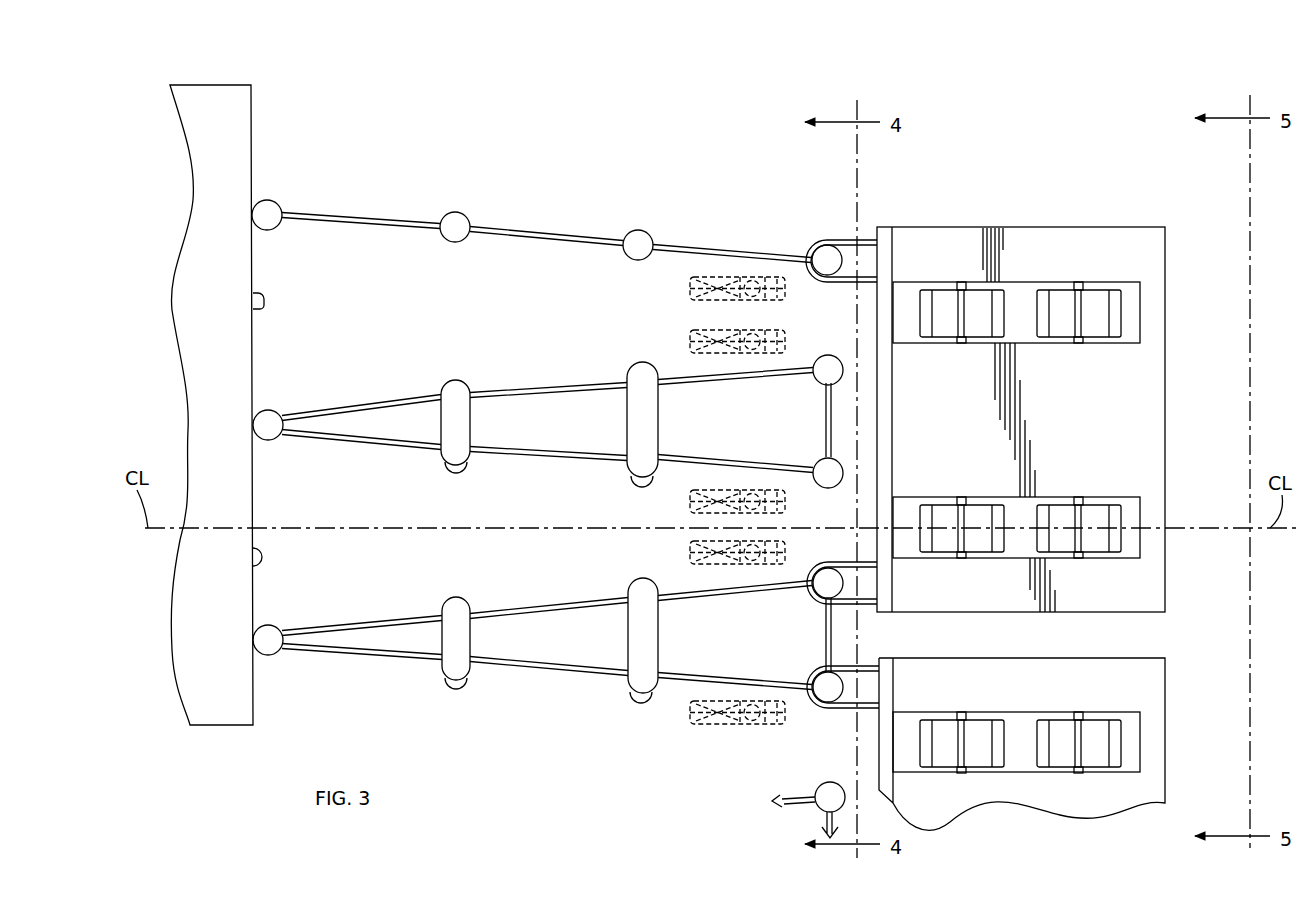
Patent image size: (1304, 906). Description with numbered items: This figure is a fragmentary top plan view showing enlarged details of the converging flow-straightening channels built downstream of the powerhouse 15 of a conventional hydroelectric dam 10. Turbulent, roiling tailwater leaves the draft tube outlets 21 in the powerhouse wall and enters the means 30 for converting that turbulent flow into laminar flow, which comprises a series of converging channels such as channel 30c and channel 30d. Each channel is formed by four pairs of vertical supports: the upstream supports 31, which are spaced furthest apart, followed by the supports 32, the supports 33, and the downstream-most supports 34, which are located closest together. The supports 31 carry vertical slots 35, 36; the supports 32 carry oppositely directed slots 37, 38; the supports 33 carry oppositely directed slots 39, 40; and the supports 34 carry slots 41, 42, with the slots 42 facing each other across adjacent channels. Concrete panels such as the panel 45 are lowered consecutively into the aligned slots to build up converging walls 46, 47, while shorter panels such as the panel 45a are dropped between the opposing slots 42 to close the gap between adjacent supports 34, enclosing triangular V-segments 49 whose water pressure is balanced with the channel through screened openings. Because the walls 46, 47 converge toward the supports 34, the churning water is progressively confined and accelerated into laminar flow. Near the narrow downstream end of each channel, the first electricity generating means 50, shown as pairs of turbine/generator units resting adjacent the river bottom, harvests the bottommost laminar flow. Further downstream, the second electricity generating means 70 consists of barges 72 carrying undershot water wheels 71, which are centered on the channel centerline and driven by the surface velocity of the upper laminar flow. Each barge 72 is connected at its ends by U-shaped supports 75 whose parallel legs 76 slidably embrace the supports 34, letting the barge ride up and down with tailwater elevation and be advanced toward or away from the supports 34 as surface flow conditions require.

The hydroelectric dam 10 is at (385, 140).
The powerhouse 15 is at (195, 125).
The draft tube outlet 21 is at (255, 300).
The means for converting turbulent tailwater flow into laminar flow 30 is at (505, 186).
The channel 30c is at (285, 584).
The channel 30d is at (285, 272).
The vertical support 31 is at (268, 200).
The vertical support 32 is at (455, 212).
The vertical support 33 is at (640, 230).
The vertical support 34 is at (810, 252).
The vertical slot 35 is at (272, 440).
The vertical slot 36 is at (276, 410).
The vertical slot 37 is at (466, 466).
The vertical slot 38 is at (446, 384).
The vertical slot 39 is at (648, 480).
The vertical slot 40 is at (645, 362).
The vertical slot 41 is at (825, 398).
The vertical slot 42 is at (826, 355).
The concrete panel 45 is at (343, 210).
The shorter panel 45a is at (835, 408).
The converging wall 46 is at (520, 456).
The converging wall 47 is at (560, 605).
The V-segment 49 is at (553, 392).
The first electricity generating means 50 is at (688, 338).
The second electricity generating means 70 is at (1090, 346).
The undershot water wheel 71 is at (1045, 297).
The barge 72 is at (1122, 245).
The U-shaped support 75 is at (823, 238).
The parallel leg 76 is at (878, 268).